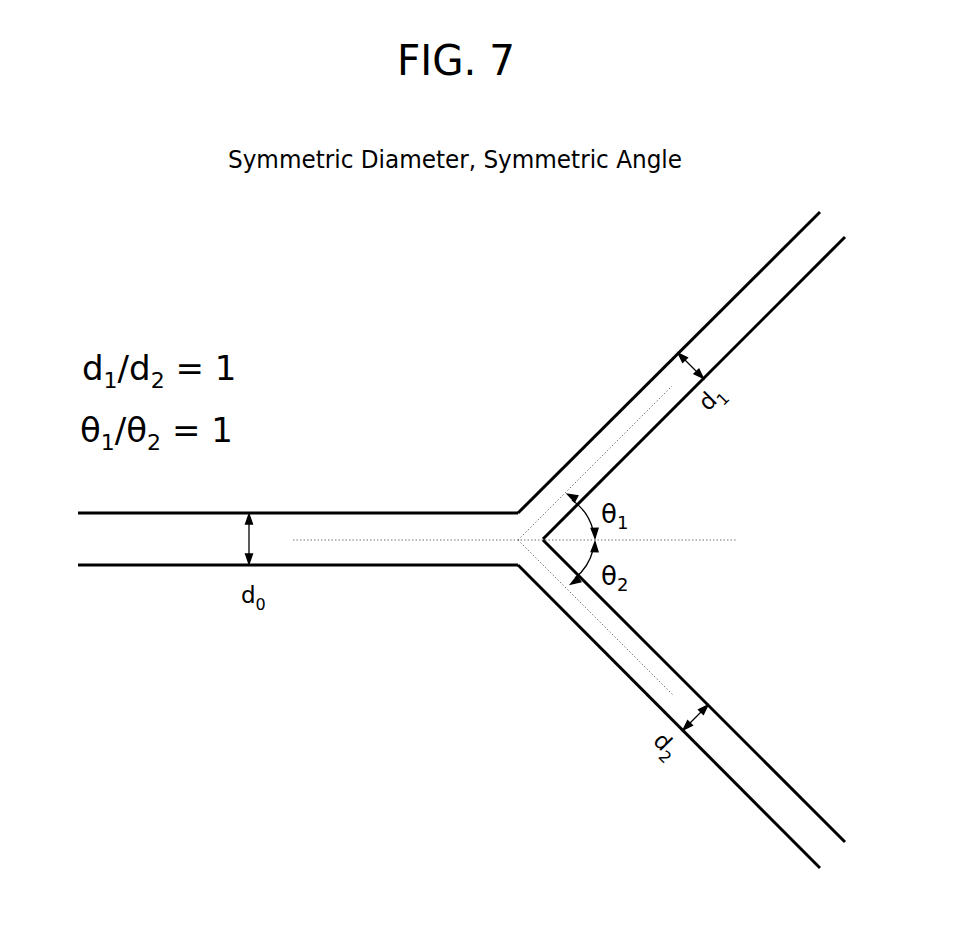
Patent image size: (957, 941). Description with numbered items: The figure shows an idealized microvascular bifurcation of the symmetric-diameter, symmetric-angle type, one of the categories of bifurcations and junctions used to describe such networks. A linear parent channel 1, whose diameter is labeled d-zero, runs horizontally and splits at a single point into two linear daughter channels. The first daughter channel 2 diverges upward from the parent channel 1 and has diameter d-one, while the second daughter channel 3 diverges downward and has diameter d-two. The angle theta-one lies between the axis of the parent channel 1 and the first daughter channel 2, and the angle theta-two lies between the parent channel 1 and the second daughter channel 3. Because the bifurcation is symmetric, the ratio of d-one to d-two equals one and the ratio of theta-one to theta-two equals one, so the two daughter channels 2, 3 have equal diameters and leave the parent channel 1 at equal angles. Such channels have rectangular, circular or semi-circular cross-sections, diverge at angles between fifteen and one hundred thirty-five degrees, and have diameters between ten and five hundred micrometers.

The parent channel 1 is at (139, 550).
The first daughter channel 2 is at (773, 280).
The second daughter channel 3 is at (760, 780).